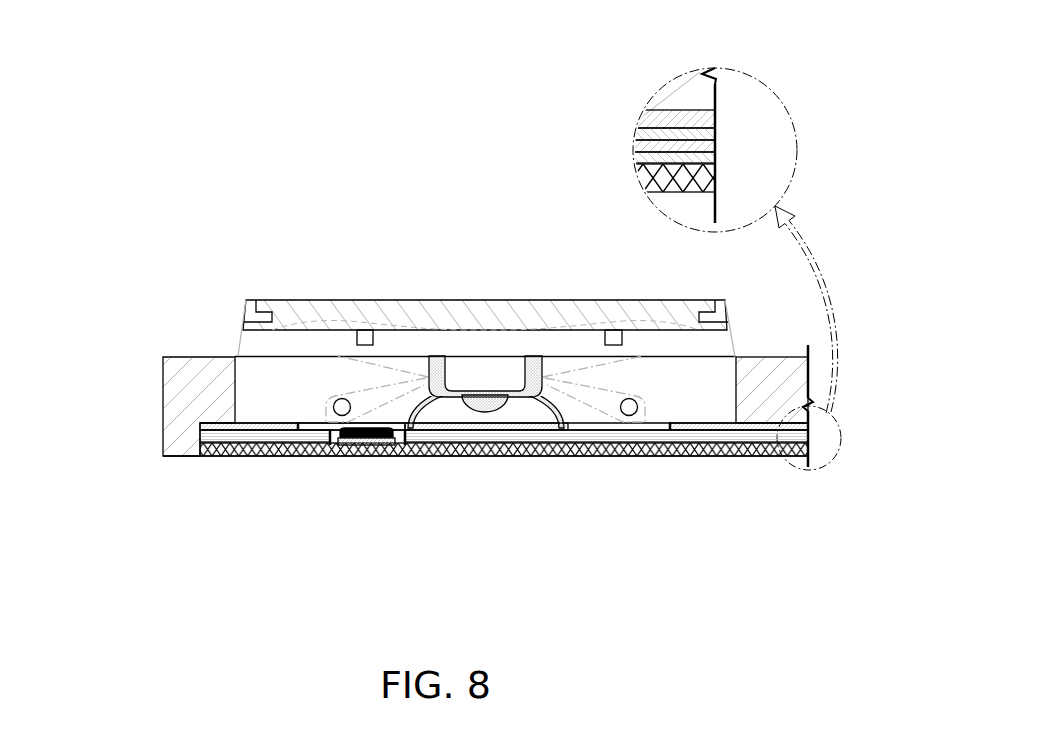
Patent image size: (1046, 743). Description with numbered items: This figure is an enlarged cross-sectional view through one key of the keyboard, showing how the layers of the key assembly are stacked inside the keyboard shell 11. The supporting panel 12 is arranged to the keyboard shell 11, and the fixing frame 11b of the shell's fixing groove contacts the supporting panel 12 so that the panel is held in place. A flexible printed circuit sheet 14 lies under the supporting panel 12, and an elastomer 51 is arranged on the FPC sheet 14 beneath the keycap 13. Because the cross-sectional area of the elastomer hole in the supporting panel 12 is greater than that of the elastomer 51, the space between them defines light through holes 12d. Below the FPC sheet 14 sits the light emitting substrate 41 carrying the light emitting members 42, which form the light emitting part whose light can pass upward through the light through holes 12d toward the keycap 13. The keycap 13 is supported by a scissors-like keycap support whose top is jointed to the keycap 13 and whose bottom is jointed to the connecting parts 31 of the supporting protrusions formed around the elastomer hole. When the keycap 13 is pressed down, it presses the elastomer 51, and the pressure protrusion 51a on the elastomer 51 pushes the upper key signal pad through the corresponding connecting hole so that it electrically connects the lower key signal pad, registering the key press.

The keyboard shell 11 is at (162, 405).
The fixing frame 11b is at (225, 412).
The supporting panel 12 is at (716, 117).
The light through holes 12d is at (313, 423).
The keycap 13 is at (485, 300).
The flexible printed circuit sheet 14 is at (716, 131).
The connecting parts 31 is at (605, 413).
The light emitting substrate 41 is at (710, 455).
The light emitting members 42 is at (362, 440).
The elastomer 51 is at (537, 400).
The pressure protrusion 51a is at (483, 405).